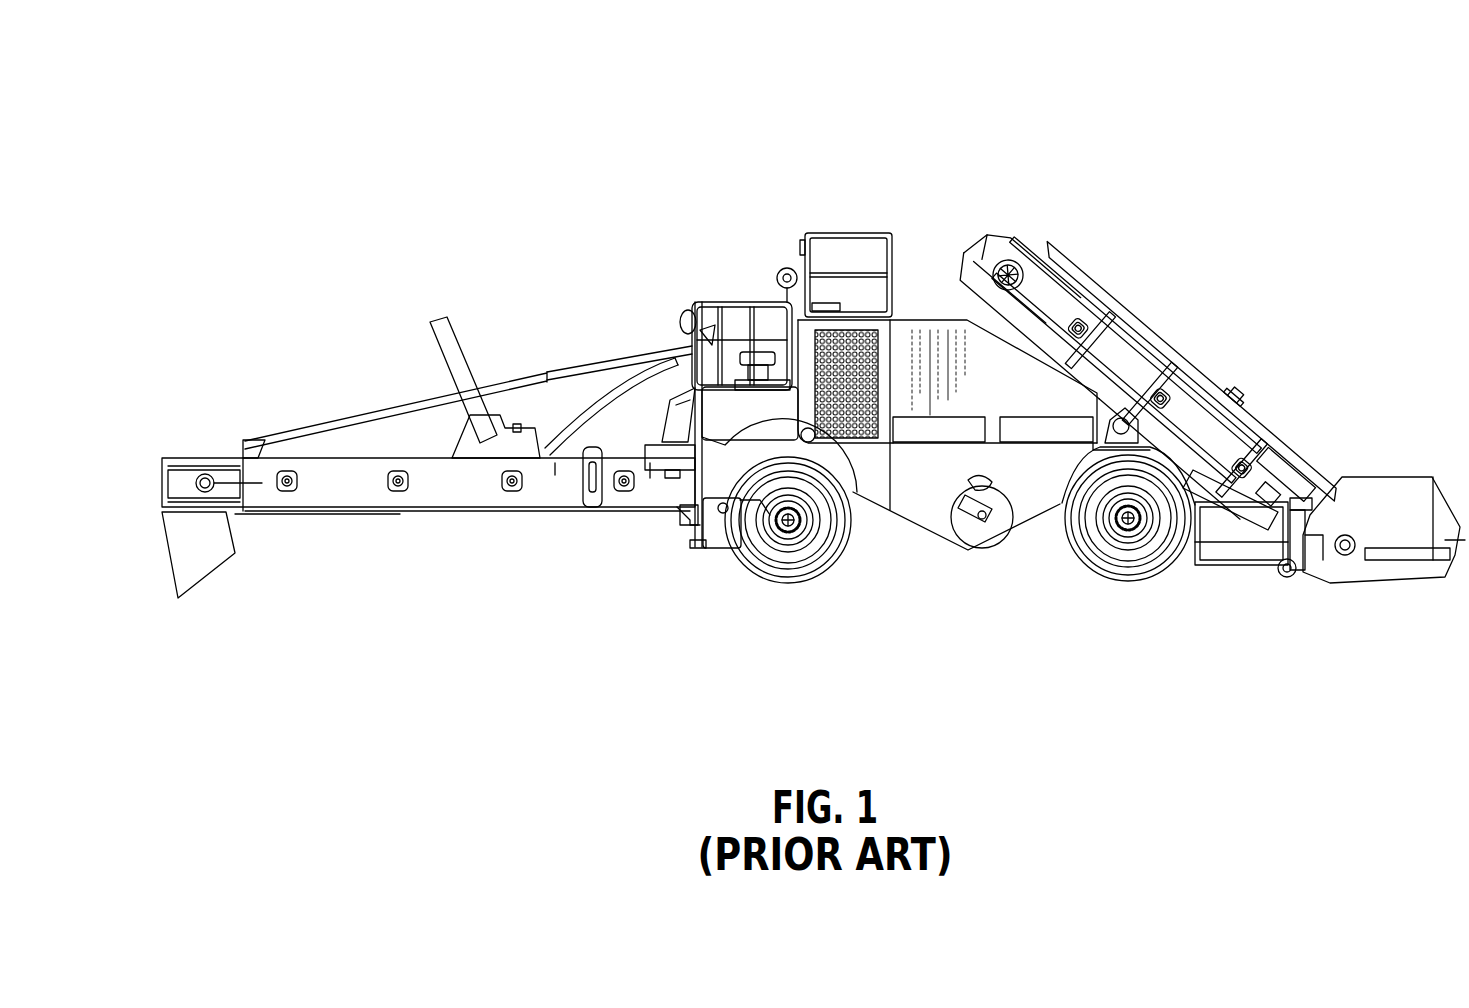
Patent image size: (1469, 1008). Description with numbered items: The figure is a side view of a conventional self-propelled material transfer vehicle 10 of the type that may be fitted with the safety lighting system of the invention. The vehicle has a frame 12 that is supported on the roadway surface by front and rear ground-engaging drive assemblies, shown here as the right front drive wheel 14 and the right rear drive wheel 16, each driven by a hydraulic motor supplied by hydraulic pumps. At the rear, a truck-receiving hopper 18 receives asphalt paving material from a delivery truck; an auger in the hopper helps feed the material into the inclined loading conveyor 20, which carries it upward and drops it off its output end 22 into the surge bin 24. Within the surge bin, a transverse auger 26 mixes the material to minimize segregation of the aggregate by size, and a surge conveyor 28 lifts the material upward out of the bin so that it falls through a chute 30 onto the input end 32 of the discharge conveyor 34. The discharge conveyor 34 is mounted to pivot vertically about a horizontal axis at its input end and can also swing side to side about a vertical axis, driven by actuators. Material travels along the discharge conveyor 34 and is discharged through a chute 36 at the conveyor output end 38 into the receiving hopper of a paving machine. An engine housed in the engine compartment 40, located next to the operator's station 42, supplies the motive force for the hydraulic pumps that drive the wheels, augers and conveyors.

The material transfer vehicle 10 is at (1013, 104).
The frame 12 is at (861, 516).
The right front drive wheel 14 is at (1119, 596).
The right rear drive wheel 16 is at (776, 590).
The truck-receiving hopper 18 is at (1394, 480).
The loading conveyor 20 is at (1148, 348).
The output end 22 is at (1031, 232).
The surge bin 24 is at (903, 356).
The transverse auger 26 is at (976, 538).
The surge conveyor 28 is at (666, 383).
The chute 30 is at (657, 426).
The input end 32 is at (664, 520).
The discharge conveyor 34 is at (481, 501).
The chute 36 is at (173, 591).
The conveyor output end 38 is at (184, 446).
The engine compartment 40 is at (853, 330).
The operator's station 42 is at (765, 278).